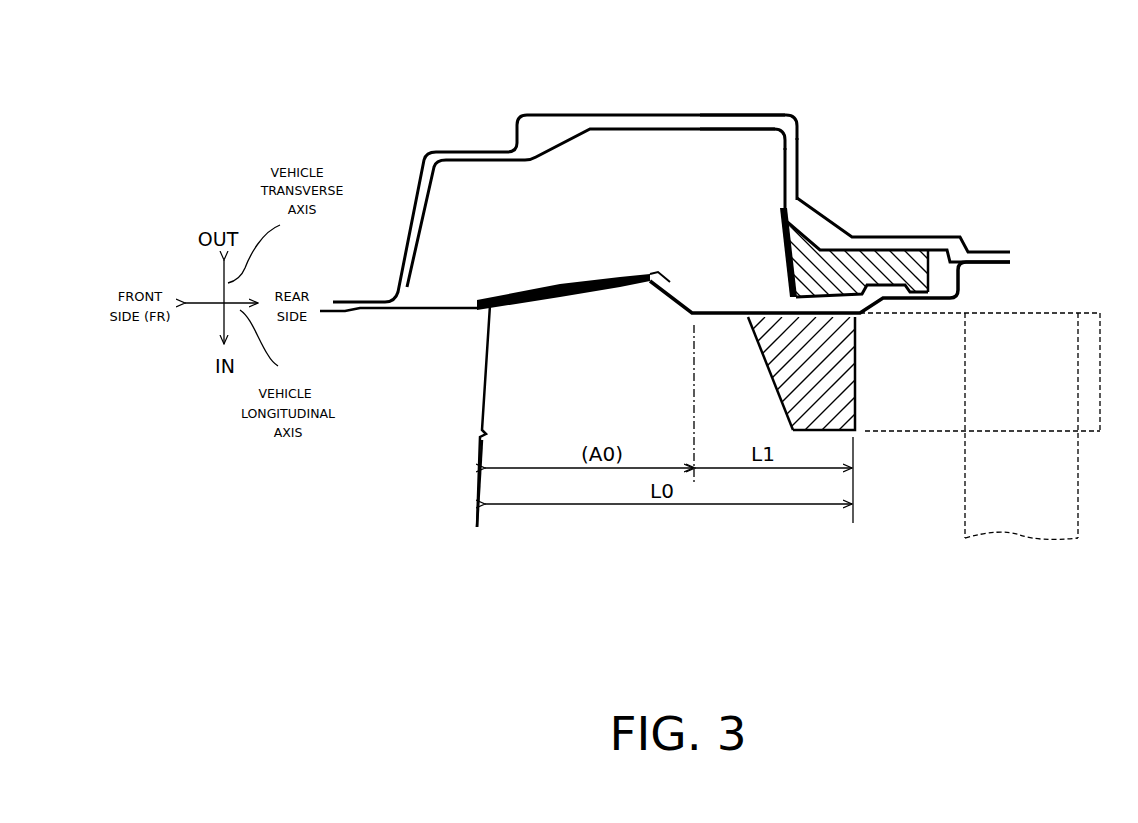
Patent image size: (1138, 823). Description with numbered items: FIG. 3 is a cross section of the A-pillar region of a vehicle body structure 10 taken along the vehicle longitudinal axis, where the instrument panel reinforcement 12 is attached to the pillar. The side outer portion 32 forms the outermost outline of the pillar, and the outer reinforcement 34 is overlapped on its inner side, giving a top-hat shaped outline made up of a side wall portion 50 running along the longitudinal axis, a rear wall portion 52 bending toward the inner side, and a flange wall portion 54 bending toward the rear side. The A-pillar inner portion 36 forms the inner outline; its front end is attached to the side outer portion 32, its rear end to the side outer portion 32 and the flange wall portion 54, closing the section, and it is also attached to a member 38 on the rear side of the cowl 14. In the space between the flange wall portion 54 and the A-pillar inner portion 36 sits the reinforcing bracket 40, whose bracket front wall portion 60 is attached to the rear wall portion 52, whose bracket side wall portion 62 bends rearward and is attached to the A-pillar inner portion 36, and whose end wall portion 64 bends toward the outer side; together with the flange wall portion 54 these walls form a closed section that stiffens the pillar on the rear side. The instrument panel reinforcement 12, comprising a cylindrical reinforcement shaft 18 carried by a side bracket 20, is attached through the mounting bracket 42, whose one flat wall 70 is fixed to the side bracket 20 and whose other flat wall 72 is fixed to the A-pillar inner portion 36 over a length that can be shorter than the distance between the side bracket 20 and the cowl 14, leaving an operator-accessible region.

The vehicle lower structure 10 is at (433, 104).
The side outer portion 32 is at (566, 122).
The outer reinforcement 34 is at (855, 172).
The side wall portion 50 is at (775, 111).
The rear wall portion 52 is at (792, 163).
The flange wall portion 54 is at (897, 208).
The reinforcing bracket 40 is at (824, 255).
The bracket front wall portion 60 is at (786, 250).
The end wall portion 64 is at (790, 267).
The bracket side wall portion 62 is at (820, 289).
The A-pillar inner portion 36 is at (622, 268).
The mounting bracket 42 is at (793, 373).
The flat wall 72 is at (790, 333).
The flat wall 70 is at (745, 355).
The instrument panel reinforcement 12 is at (980, 485).
The side bracket 20 is at (927, 423).
The reinforcement shaft 18 is at (1021, 463).
The cowl 14 is at (432, 432).
The member 38 is at (480, 485).